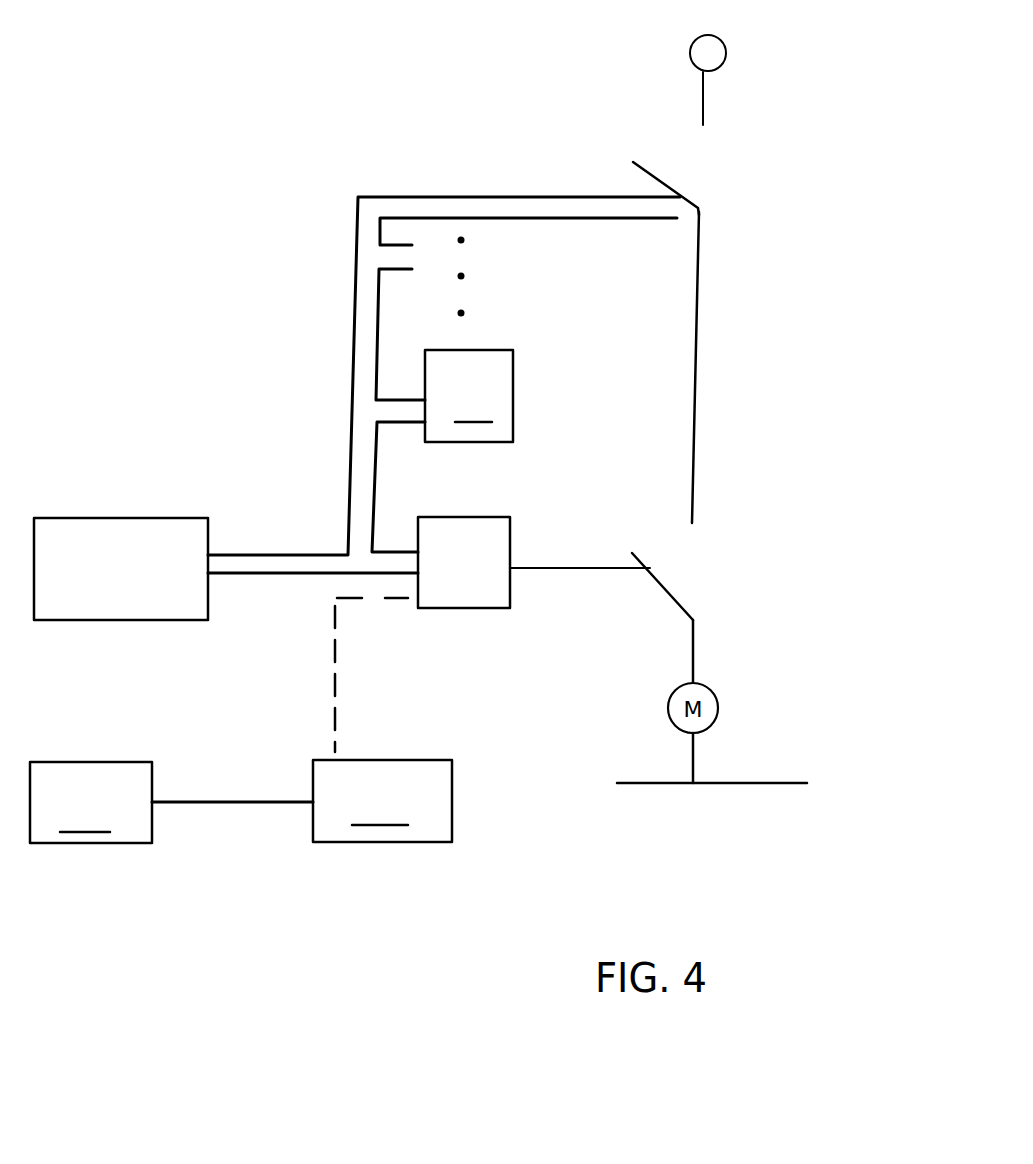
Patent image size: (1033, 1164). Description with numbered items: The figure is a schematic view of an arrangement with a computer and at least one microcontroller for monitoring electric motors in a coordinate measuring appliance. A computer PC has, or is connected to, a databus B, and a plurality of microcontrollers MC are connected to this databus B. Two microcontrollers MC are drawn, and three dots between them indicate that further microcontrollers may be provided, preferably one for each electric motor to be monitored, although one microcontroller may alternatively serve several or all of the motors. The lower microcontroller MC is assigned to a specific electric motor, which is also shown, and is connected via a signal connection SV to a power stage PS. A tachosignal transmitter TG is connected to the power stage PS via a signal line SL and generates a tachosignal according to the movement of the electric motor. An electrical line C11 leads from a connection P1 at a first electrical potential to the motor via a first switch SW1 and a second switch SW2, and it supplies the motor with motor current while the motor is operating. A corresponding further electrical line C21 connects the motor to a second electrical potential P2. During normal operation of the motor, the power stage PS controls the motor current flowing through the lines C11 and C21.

The computer PC is at (92, 620).
The databus B is at (257, 556).
The microcontroller MC is at (467, 608).
The signal connection SV is at (343, 690).
The first switch SW1 is at (718, 201).
The second switch SW2 is at (737, 578).
The electrical line C11 is at (703, 99).
The connection P1 is at (690, 50).
The further electrical line C21 is at (693, 752).
The second electrical potential P2 is at (657, 783).
The tachosignal transmitter TG is at (91, 802).
The power stage PS is at (382, 801).
The signal line SL is at (218, 802).